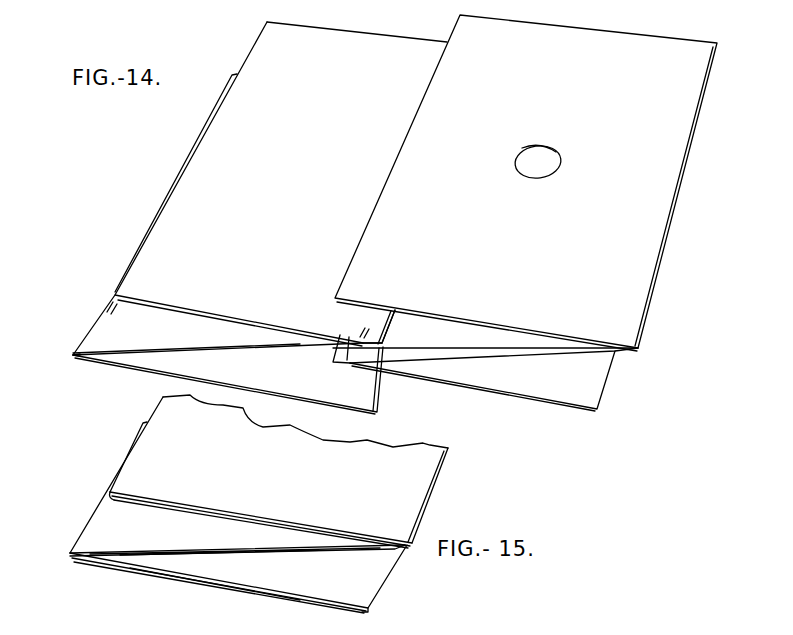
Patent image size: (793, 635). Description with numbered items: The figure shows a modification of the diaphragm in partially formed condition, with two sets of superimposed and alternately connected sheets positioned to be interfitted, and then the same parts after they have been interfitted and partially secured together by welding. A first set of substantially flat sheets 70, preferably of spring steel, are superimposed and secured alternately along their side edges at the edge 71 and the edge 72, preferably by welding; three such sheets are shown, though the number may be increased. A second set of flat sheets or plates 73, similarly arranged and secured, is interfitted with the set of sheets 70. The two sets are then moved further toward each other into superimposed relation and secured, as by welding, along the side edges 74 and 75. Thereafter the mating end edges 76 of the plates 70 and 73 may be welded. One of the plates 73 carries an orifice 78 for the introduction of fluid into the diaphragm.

In FIG. 14, the flat sheets 70 is at (178, 228).
In FIG. 14, the side edge 71 is at (372, 336).
In FIG. 14, the side edge 72 is at (73, 354).
In FIG. 14, the flat sheets or plates 73 is at (625, 261).
In FIG. 15, the side edge 74 is at (113, 498).
In FIG. 15, the side edge 75 is at (370, 611).
In FIG. 15, the mating end edges 76 is at (247, 515).
In FIG. 14, the orifice 78 is at (558, 153).